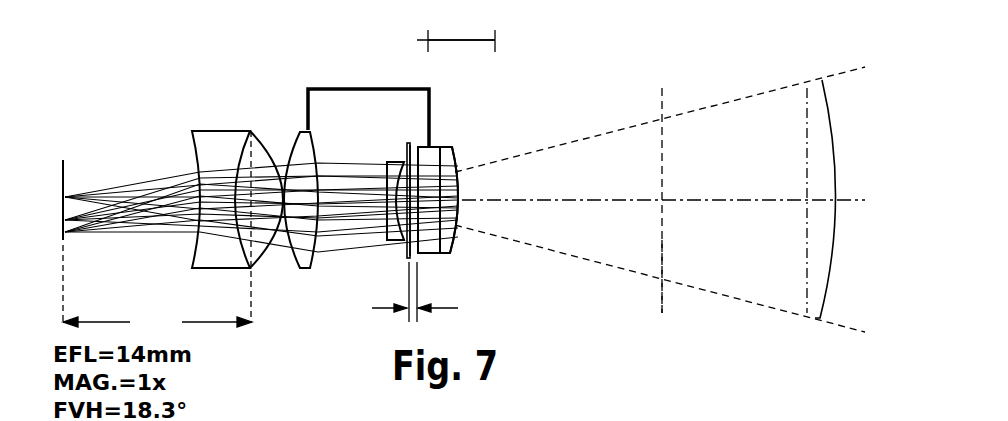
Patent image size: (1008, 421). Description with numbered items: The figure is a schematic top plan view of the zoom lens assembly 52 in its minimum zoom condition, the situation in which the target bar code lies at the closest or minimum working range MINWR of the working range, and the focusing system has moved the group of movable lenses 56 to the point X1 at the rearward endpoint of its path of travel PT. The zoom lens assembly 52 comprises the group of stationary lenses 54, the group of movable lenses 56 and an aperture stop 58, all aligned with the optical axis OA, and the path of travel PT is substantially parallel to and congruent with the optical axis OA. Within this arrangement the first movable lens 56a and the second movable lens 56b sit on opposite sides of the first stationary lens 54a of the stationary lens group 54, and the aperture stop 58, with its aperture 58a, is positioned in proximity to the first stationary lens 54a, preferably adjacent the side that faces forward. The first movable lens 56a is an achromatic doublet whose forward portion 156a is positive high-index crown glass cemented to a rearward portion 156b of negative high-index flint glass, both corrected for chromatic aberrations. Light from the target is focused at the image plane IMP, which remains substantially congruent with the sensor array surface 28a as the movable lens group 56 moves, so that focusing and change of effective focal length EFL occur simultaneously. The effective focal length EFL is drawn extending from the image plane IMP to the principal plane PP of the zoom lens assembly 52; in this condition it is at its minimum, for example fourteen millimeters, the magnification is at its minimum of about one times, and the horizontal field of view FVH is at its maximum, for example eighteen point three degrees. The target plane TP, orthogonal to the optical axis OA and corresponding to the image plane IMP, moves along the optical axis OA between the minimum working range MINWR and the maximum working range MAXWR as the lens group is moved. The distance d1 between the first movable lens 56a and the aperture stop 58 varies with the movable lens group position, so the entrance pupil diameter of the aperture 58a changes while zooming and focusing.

The zoom lens assembly 52 is at (147, 119).
The group of stationary lenses 54 is at (224, 124).
The first stationary lens 54a is at (395, 242).
The group of movable lenses 56 is at (378, 82).
The first movable lens 56a is at (441, 146).
The second movable lens 56b is at (268, 137).
The aperture stop 58 is at (405, 150).
The aperture 58a is at (418, 160).
The forward portion 156a is at (447, 240).
The rearward portion 156b is at (431, 252).
The sensor array surface 28a is at (66, 170).
The image plane IMP is at (63, 168).
The principal plane PP is at (253, 287).
The effective focal length EFL is at (157, 322).
The distance between first movable lens and aperture stop d1 is at (403, 292).
The path of travel PT is at (448, 40).
The point X1 is at (417, 40).
The optical axis OA is at (697, 200).
The minimum working range MINWR is at (661, 104).
The maximum working range MAXWR is at (805, 104).
The target plane TP is at (664, 242).
The horizontal field of view FVH is at (833, 278).